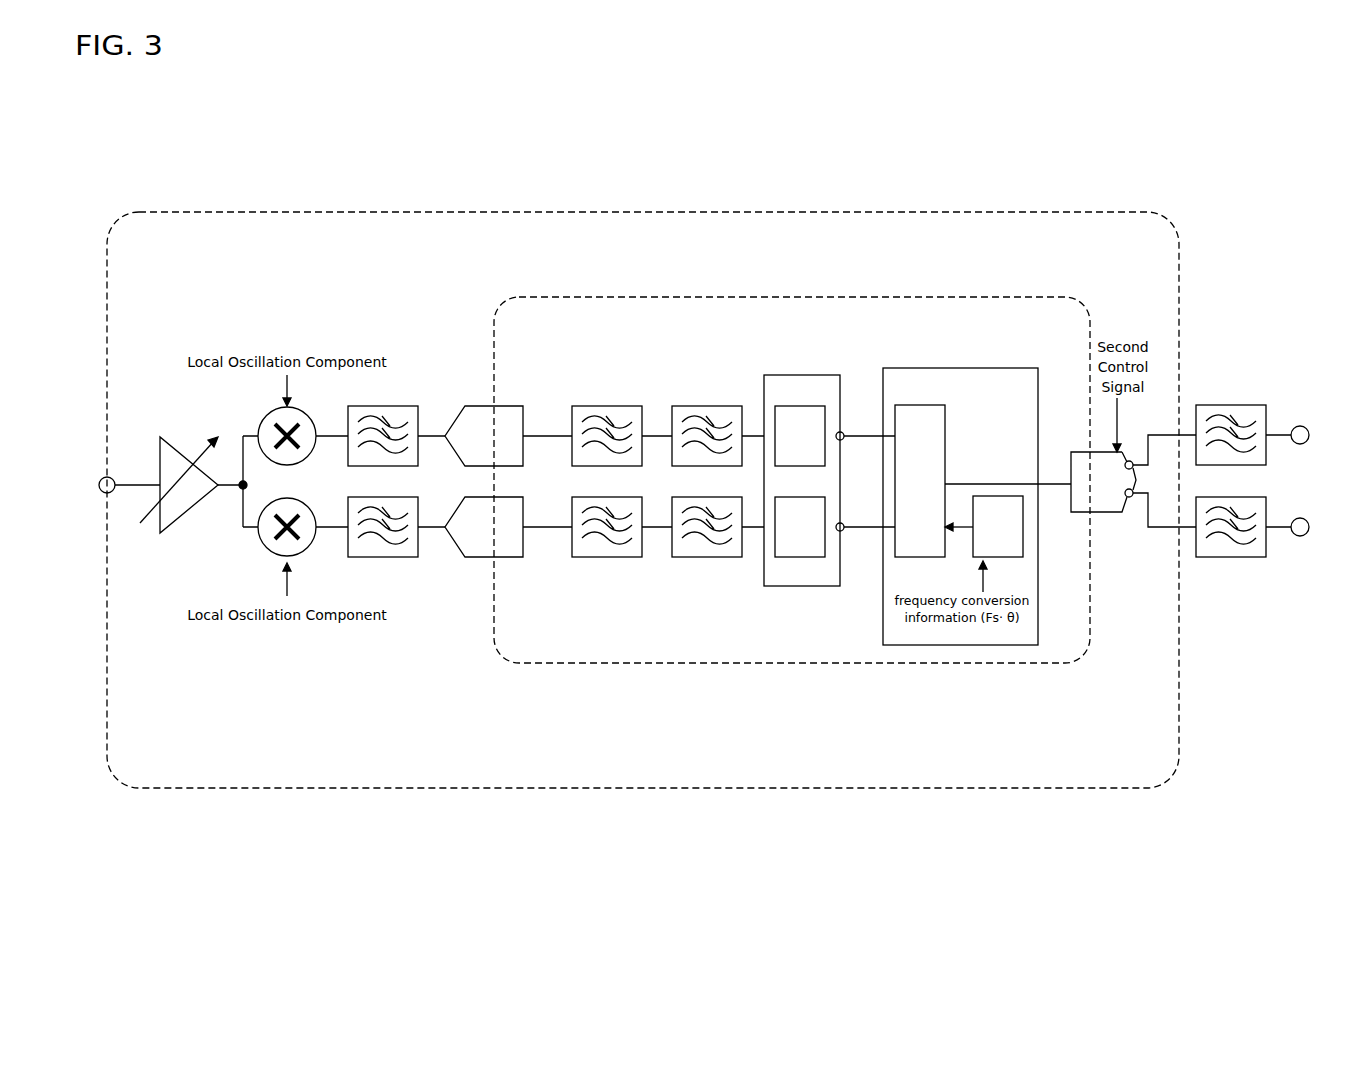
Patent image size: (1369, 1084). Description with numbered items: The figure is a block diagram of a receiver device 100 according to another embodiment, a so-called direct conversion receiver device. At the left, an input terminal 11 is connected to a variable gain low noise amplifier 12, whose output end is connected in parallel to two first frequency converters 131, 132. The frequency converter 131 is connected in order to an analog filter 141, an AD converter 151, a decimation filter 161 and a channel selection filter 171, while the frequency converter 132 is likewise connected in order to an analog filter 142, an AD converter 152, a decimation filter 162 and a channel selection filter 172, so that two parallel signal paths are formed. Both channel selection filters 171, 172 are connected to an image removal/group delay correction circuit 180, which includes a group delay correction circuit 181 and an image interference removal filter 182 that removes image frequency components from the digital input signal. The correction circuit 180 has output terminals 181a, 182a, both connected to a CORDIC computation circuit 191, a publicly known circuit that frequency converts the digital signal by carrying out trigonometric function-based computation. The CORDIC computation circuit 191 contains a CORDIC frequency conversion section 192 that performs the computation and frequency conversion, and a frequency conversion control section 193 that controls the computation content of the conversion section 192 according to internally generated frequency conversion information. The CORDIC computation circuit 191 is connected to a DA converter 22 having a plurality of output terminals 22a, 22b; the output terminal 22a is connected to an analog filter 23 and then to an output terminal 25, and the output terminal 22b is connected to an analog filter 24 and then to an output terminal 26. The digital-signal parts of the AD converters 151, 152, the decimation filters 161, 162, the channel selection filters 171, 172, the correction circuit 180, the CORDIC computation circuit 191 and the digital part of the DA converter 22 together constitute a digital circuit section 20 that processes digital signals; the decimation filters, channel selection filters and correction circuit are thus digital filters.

The receiver device 100 is at (1110, 212).
The digital circuit section 20 is at (1020, 297).
The input terminal 11 is at (112, 476).
The variable gain low noise amplifier 12 is at (166, 438).
The frequency converter 131 is at (307, 415).
The frequency converter 132 is at (307, 549).
The analog filter 141 is at (382, 407).
The analog filter 142 is at (382, 558).
The AD converter 151 is at (508, 407).
The AD converter 152 is at (508, 558).
The decimation filter 161 is at (606, 407).
The decimation filter 162 is at (606, 558).
The channel selection filter 171 is at (699, 407).
The channel selection filter 172 is at (690, 558).
The image removal/group delay correction circuit 180 is at (776, 375).
The group delay correction circuit 181 is at (789, 406).
The image interference removal filter 182 is at (789, 557).
The output terminal 181a is at (845, 432).
The output terminal 182a is at (845, 531).
The CORDIC computation circuit 191 is at (978, 368).
The CORDIC frequency conversion section 192 is at (909, 405).
The frequency conversion control section 193 is at (989, 557).
The DA converter 22 is at (1076, 516).
The output terminal 22a is at (1132, 461).
The output terminal 22b is at (1132, 498).
The analog filter 23 is at (1240, 405).
The analog filter 24 is at (1240, 557).
The output terminal 25 is at (1306, 428).
The output terminal 26 is at (1306, 520).